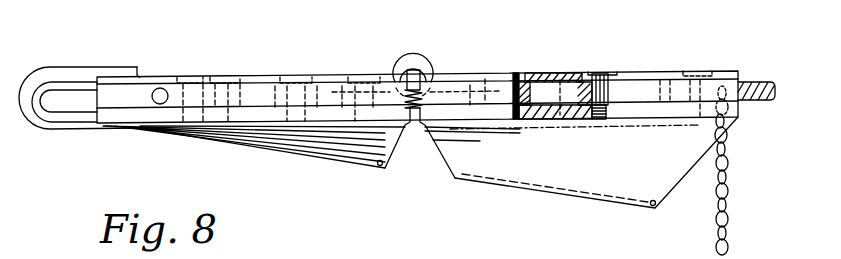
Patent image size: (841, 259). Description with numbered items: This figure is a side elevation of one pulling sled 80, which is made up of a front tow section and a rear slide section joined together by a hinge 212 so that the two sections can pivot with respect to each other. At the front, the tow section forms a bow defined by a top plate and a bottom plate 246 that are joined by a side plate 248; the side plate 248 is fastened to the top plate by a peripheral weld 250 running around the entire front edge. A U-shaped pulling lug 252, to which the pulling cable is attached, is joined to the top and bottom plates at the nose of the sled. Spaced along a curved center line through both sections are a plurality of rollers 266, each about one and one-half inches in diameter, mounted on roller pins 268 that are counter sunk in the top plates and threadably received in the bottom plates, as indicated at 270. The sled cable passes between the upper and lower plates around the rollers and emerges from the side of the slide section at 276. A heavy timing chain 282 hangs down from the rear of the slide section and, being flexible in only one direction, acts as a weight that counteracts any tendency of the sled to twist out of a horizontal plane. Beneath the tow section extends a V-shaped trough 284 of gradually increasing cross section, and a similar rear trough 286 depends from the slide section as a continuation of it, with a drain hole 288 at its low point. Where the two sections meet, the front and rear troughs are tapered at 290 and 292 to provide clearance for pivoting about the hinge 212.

The sled 80 is at (155, 62).
The hinge 212 is at (431, 63).
The bottom plate 246 is at (117, 120).
The side plate 248 is at (112, 102).
The peripheral weld 250 is at (160, 78).
The U-shaped pulling lug 252 is at (53, 72).
The rollers 266 is at (530, 74).
The roller pins 268 is at (368, 78).
The threaded pin reception point 270 is at (597, 110).
The sled cable exit 276 is at (753, 78).
The timing chain 282 is at (729, 152).
The V-shaped trough 284 is at (305, 150).
The rear trough 286 is at (380, 167).
The drain hole 288 is at (655, 208).
The front trough taper 290 is at (383, 150).
The rear trough taper 292 is at (448, 167).